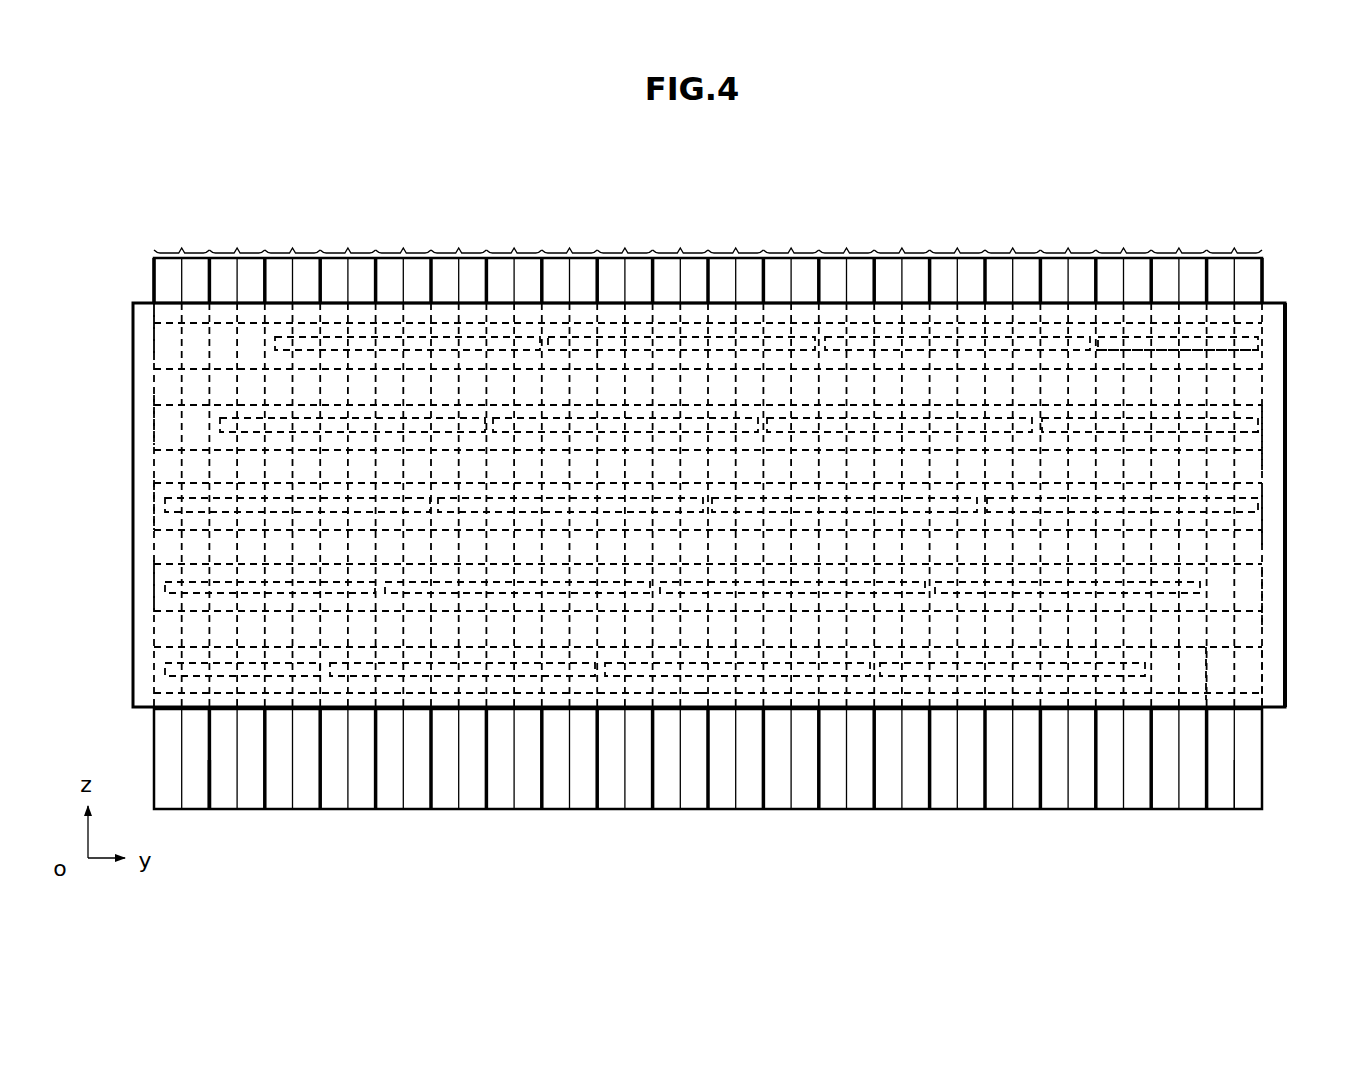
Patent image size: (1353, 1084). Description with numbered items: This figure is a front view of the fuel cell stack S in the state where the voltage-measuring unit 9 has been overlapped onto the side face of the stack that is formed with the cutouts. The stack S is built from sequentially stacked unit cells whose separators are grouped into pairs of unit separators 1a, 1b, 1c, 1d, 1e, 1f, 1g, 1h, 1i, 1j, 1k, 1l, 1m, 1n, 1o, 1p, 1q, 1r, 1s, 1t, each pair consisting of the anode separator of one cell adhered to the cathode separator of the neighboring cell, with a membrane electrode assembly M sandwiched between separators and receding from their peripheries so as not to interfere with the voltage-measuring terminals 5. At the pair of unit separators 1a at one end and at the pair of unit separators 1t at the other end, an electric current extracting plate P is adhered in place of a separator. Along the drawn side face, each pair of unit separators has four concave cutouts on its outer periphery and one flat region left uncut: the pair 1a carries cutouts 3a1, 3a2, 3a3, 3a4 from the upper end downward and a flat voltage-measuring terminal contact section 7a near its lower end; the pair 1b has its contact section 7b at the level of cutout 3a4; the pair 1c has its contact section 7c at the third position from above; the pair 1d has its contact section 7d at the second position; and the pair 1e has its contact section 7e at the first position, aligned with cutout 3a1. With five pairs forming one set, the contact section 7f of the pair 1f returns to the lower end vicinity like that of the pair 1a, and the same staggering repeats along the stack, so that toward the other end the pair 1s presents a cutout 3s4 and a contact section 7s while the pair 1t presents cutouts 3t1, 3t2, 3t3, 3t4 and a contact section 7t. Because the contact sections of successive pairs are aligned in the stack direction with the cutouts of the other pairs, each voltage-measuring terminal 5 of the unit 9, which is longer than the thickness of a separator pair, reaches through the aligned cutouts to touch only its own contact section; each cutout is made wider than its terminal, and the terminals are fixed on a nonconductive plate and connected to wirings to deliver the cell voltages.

The pair of unit separators 1a is at (163, 247).
The pair of unit separators 1b is at (218, 247).
The pair of unit separators 1c is at (274, 247).
The pair of unit separators 1d is at (329, 247).
The pair of unit separators 1e is at (385, 247).
The pair of unit separators 1f is at (440, 247).
The pair of unit separators 1g is at (495, 247).
The pair of unit separators 1h is at (551, 247).
The pair of unit separators 1i is at (606, 247).
The pair of unit separators 1j is at (662, 247).
The pair of unit separators 1k is at (717, 247).
The pair of unit separators 1l is at (772, 247).
The pair of unit separators 1m is at (828, 247).
The pair of unit separators 1n is at (883, 247).
The pair of unit separators 1o is at (939, 247).
The pair of unit separators 1p is at (994, 247).
The pair of unit separators 1q is at (1049, 247).
The pair of unit separators 1r is at (1105, 247).
The pair of unit separators 1s is at (1160, 247).
The pair of unit separators 1t is at (1216, 247).
The voltage-measuring terminal 5 is at (432, 337).
The fuel cell stack S is at (964, 256).
The cutout 3a1 is at (172, 345).
The cutout 3a2 is at (172, 430).
The cutout 3a3 is at (172, 517).
The cutout 3a4 is at (172, 600).
The cutout 3t1 is at (1243, 443).
The cutout 3t2 is at (1243, 524).
The cutout 3t3 is at (1243, 602).
The cutout 3t4 is at (1245, 679).
The cutout 3s4 is at (1194, 670).
The voltage-measuring terminal contact section 7a is at (172, 690).
The voltage-measuring terminal contact section 7b is at (235, 600).
The voltage-measuring terminal contact section 7c is at (290, 520).
The voltage-measuring terminal contact section 7d is at (338, 440).
The voltage-measuring terminal contact section 7e is at (395, 362).
The voltage-measuring terminal contact section 7f is at (487, 692).
The voltage-measuring terminal contact section 7s is at (1192, 396).
The voltage-measuring terminal contact section 7t is at (1243, 361).
The voltage-measuring unit 9 is at (702, 716).
The electric current extracting plate P is at (176, 798).
The membrane electrode assembly M is at (218, 798).